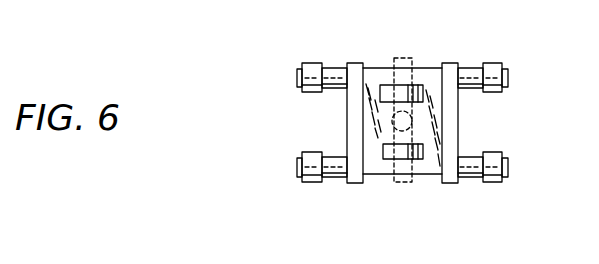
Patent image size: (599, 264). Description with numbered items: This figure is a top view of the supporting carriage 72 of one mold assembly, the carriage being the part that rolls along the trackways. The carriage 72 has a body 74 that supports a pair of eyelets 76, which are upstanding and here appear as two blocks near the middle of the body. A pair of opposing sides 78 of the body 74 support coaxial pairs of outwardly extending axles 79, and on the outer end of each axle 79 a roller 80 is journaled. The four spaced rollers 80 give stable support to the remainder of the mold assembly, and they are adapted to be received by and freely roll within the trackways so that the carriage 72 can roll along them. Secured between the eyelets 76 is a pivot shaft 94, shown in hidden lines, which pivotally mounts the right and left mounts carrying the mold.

The supporting carriage 72 is at (483, 20).
The body 74 is at (430, 172).
The eyelets 76 is at (383, 84).
The opposing sides 78 is at (346, 125).
The axles 79 is at (330, 65).
The rollers 80 is at (305, 94).
The pivot shaft 94 is at (407, 62).